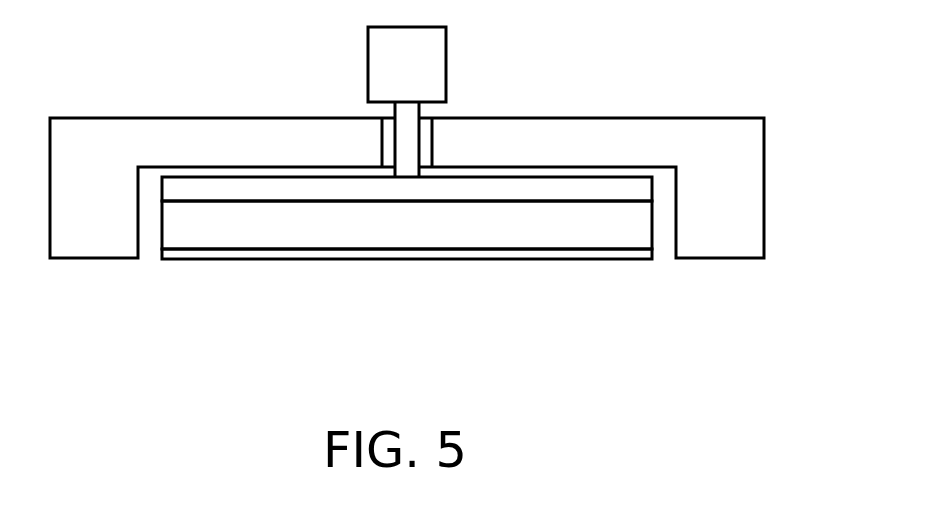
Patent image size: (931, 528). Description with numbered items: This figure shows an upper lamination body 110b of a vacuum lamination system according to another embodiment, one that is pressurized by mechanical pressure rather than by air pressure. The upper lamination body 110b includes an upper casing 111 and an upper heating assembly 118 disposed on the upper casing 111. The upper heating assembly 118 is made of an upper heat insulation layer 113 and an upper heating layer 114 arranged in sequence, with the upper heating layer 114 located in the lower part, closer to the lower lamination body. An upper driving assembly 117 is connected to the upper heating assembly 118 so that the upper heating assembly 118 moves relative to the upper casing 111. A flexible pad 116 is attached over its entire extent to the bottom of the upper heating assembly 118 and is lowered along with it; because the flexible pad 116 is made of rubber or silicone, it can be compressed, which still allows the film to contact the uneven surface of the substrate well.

The upper lamination body 110b is at (708, 50).
The upper casing 111 is at (738, 209).
The upper heat insulation layer 113 is at (212, 191).
The upper heating layer 114 is at (278, 223).
The flexible pad 116 is at (418, 253).
The upper driving assembly 117 is at (427, 69).
The upper heating assembly 118 is at (407, 272).